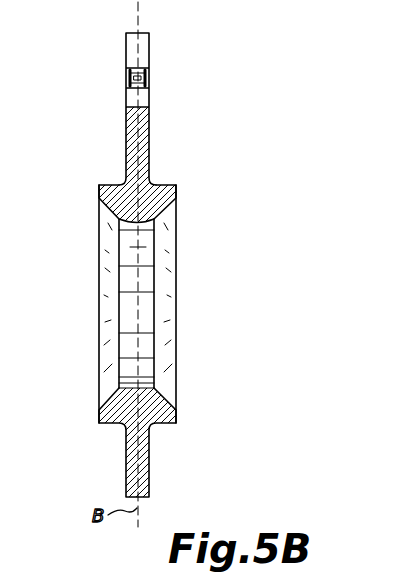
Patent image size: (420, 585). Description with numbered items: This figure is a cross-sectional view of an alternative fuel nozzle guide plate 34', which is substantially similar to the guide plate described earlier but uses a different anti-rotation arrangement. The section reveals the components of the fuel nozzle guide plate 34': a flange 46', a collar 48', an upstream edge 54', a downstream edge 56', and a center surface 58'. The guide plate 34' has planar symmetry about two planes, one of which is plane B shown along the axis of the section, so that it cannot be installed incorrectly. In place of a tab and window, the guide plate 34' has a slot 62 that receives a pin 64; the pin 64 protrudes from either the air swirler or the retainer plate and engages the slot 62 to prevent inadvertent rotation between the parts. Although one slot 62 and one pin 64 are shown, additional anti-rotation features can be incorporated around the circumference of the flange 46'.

The slot 62 is at (133, 48).
The pin 64 is at (126, 78).
The fuel nozzle guide plate 34' is at (220, 116).
The collar 48' is at (166, 200).
The upstream edge 54' is at (165, 304).
The downstream edge 56' is at (73, 305).
The center surface 58' is at (178, 303).
The flange 46' is at (121, 442).